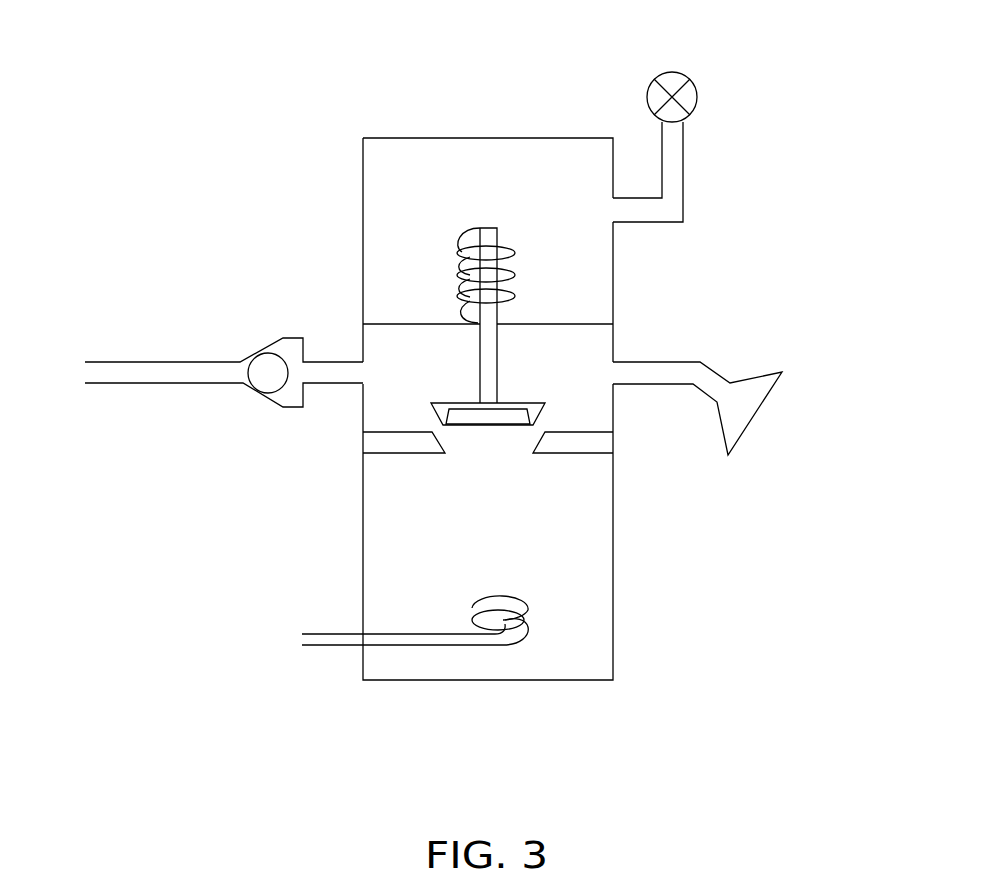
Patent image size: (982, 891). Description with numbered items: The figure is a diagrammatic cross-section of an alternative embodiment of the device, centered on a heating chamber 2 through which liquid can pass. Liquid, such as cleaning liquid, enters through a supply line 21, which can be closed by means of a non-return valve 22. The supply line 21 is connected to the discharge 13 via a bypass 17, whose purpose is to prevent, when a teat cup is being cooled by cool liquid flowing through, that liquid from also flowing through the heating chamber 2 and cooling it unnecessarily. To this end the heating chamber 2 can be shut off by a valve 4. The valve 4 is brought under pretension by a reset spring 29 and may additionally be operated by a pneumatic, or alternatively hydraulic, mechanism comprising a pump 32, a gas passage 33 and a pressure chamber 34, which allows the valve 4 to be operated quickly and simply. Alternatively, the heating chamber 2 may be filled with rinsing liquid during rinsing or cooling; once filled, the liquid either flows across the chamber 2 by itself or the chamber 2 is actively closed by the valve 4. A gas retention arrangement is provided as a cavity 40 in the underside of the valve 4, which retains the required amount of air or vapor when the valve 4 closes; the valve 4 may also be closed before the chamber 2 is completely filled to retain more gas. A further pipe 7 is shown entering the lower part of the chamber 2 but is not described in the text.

The heating chamber 2 is at (587, 599).
The pressure chamber 34 is at (437, 199).
The gas passage 33 is at (639, 198).
The pump 32 is at (695, 88).
The reset spring 29 is at (457, 286).
The bypass 17 is at (511, 367).
The valve 4 is at (545, 413).
The cavity 40 is at (487, 416).
The discharge 13 is at (687, 373).
The supply line 21 is at (147, 372).
The non-return valve 22 is at (267, 375).
The supply pipe 7 is at (489, 615).